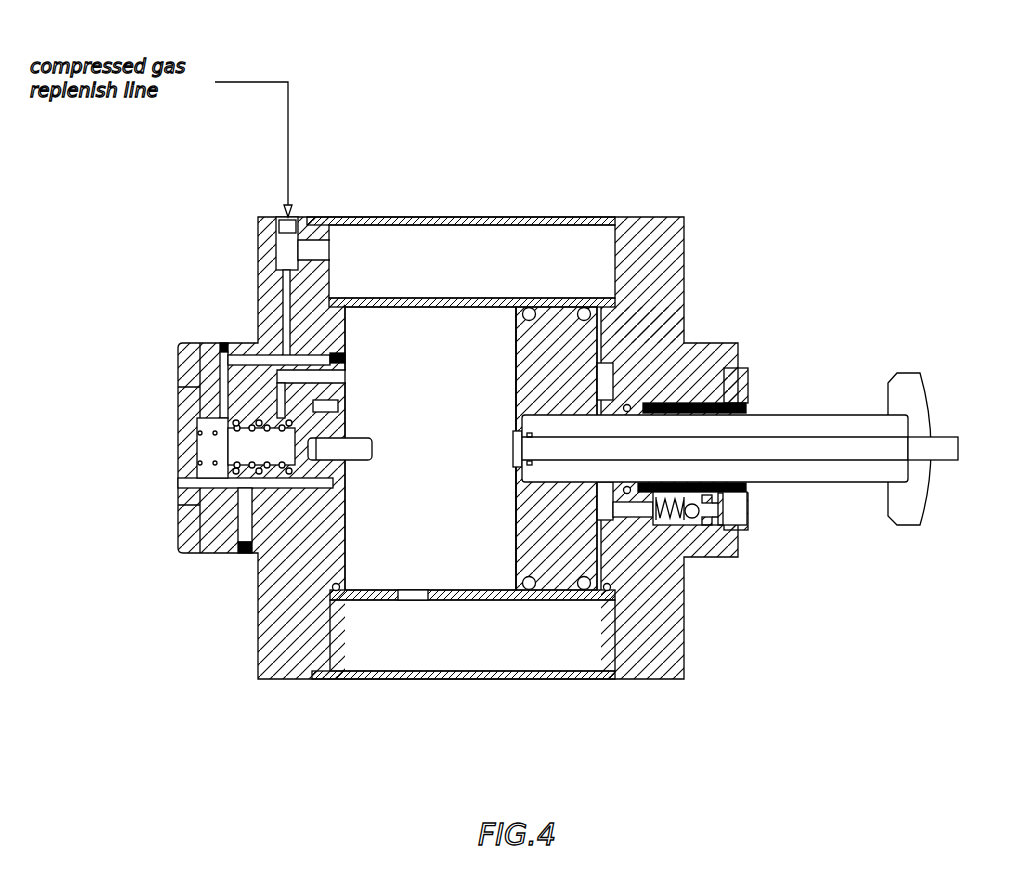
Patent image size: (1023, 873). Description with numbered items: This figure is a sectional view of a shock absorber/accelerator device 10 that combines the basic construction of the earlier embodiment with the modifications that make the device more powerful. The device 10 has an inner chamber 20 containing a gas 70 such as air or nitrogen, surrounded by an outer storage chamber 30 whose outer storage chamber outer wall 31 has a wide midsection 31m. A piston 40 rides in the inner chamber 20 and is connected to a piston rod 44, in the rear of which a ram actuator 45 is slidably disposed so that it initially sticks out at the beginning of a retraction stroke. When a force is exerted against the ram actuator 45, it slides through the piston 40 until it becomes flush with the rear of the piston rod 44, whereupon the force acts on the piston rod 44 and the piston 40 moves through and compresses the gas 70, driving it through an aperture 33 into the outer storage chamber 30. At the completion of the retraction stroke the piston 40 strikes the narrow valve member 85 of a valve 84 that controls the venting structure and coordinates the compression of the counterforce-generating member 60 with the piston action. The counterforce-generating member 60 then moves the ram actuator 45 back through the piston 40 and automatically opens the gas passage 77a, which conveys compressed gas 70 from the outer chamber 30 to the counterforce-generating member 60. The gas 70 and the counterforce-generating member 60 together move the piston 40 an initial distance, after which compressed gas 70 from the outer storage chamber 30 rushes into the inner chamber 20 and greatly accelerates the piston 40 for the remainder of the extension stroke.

The shock absorber/accelerator device 10 is at (667, 195).
The inner chamber 20 is at (378, 520).
The outer storage chamber 30 is at (527, 252).
The outer storage chamber outer wall 31 is at (457, 217).
The wide midsection 31m is at (468, 680).
The aperture 33 is at (413, 600).
The piston 40 is at (545, 560).
The piston rod 44 is at (813, 413).
The ram actuator 45 is at (945, 462).
The counterforce-generating member 60 is at (215, 463).
The gas 70 is at (488, 567).
The gas passage 77a is at (222, 407).
The valve 84 is at (270, 470).
The narrow valve member 85 is at (355, 461).